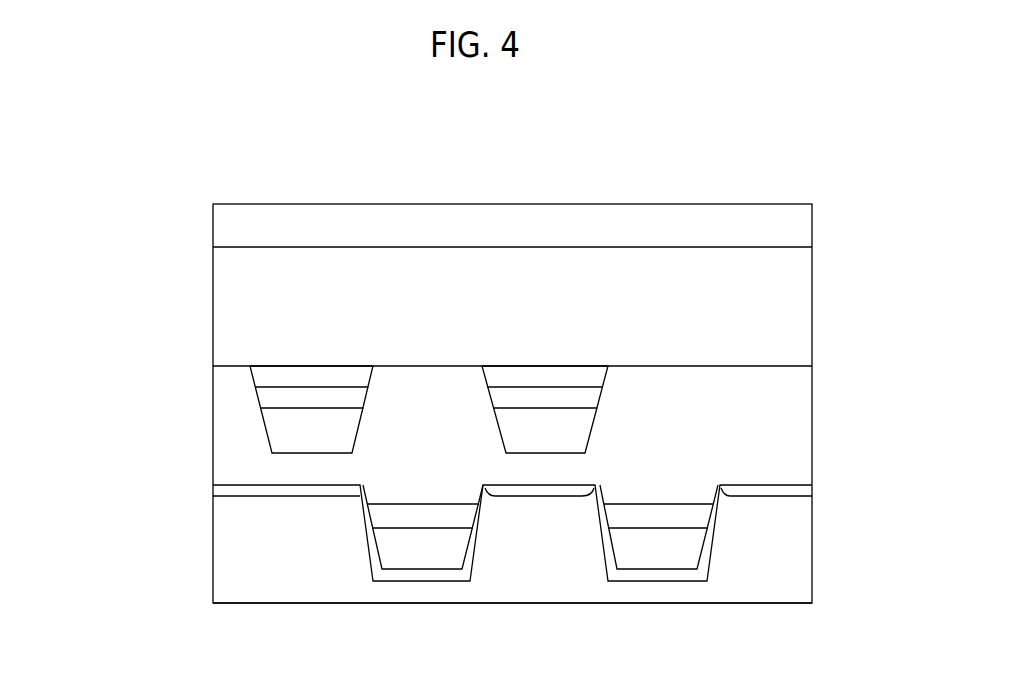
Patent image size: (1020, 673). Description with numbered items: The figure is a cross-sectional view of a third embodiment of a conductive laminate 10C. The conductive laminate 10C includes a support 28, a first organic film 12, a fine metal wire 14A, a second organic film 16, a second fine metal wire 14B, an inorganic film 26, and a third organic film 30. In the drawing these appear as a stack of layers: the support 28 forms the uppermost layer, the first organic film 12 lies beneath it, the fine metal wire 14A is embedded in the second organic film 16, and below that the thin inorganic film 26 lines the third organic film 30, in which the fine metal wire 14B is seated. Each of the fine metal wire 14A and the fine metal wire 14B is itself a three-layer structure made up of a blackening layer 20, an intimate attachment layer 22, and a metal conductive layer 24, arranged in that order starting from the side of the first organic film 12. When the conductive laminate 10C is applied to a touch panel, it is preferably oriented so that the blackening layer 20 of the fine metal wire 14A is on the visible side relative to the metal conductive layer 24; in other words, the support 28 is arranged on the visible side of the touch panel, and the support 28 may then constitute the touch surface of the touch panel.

The conductive laminate 10C is at (830, 190).
The support 28 is at (800, 227).
The first organic film 12 is at (800, 294).
The second organic film 16 is at (800, 436).
The inorganic film 26 is at (787, 489).
The third organic film 30 is at (800, 556).
The fine metal wire 14A is at (134, 365).
The fine metal wire 14B is at (134, 508).
The blackening layer 20 is at (270, 375).
The intimate attachment layer 22 is at (270, 398).
The metal conductive layer 24 is at (280, 440).